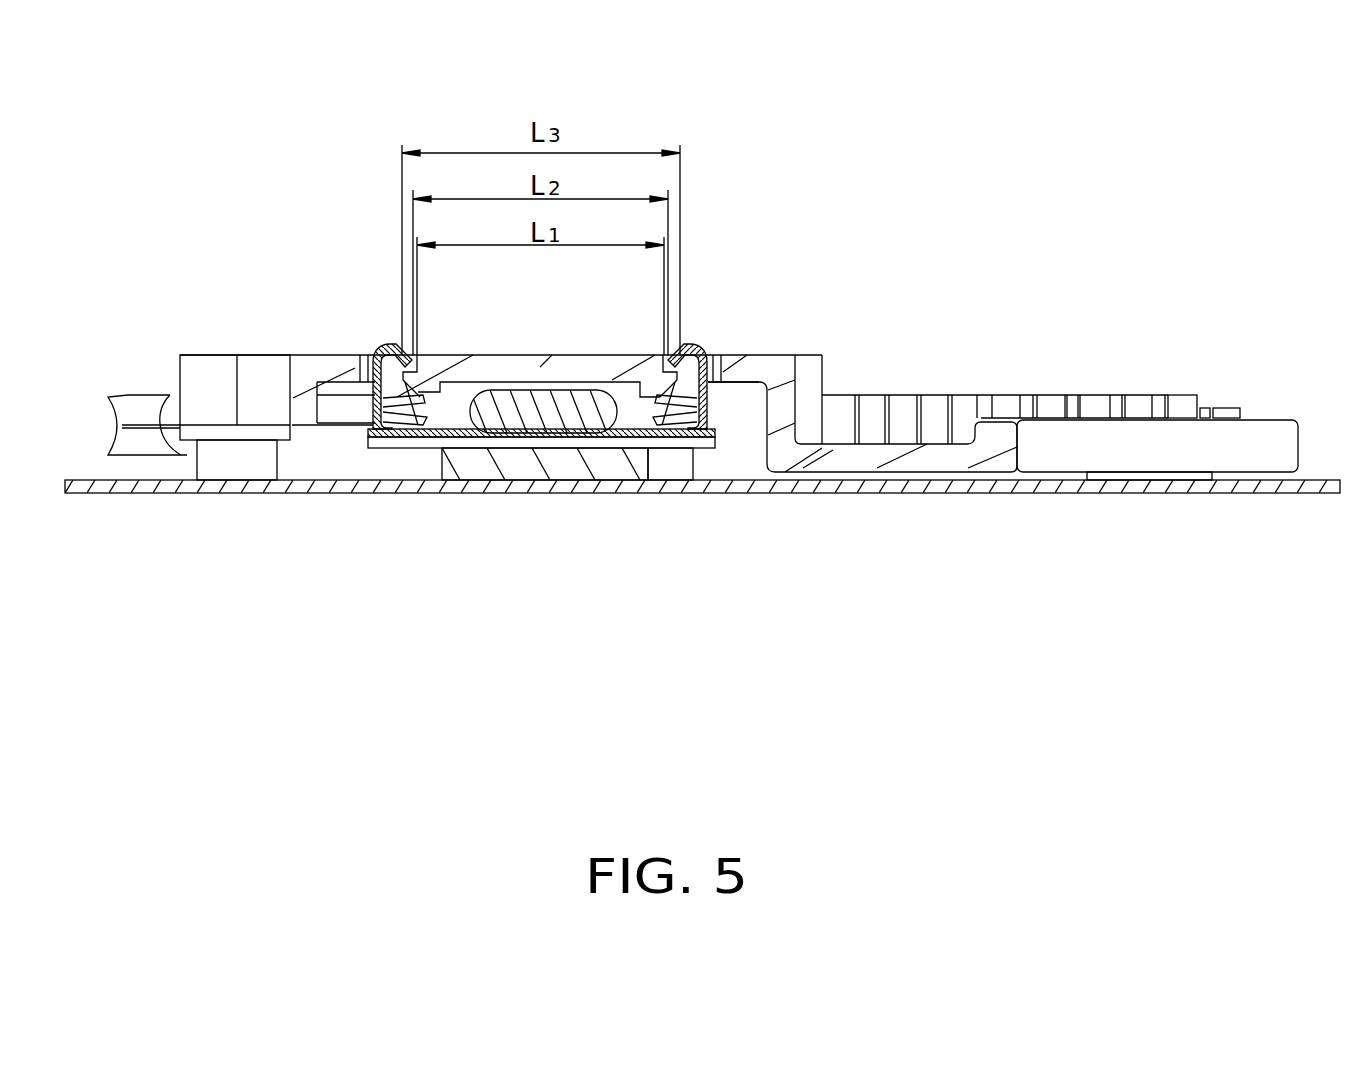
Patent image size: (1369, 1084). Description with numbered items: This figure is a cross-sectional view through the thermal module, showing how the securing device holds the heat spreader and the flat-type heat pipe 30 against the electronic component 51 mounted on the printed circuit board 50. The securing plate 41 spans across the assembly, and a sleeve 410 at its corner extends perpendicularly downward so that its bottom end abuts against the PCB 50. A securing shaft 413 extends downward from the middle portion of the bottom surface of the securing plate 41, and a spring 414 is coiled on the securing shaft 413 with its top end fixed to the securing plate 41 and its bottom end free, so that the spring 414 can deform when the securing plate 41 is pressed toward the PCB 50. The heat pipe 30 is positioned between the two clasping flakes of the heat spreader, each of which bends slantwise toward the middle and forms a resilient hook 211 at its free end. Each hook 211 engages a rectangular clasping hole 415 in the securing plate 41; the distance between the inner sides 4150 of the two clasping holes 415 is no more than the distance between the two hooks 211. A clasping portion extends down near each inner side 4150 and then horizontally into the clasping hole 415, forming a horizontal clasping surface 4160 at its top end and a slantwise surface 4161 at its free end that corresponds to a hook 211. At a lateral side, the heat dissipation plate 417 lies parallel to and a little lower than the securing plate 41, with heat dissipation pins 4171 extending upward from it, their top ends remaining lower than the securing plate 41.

The securing plate 41 is at (315, 368).
The clasping hole 415 is at (377, 352).
The flat-type heat pipe 30 is at (535, 400).
The hook 211 is at (698, 352).
The heat dissipation pin 4171 is at (1190, 400).
The heat dissipation plate 417 is at (1270, 435).
The sleeve 410 is at (210, 463).
The spring 414 is at (374, 396).
The securing shaft 413 is at (375, 430).
The clasping surface 4160 is at (420, 437).
The electronic component 51 is at (493, 463).
The inner side of clasping hole 4150 is at (672, 366).
The slantwise surface 4161 is at (707, 402).
The printed circuit board 50 is at (933, 485).